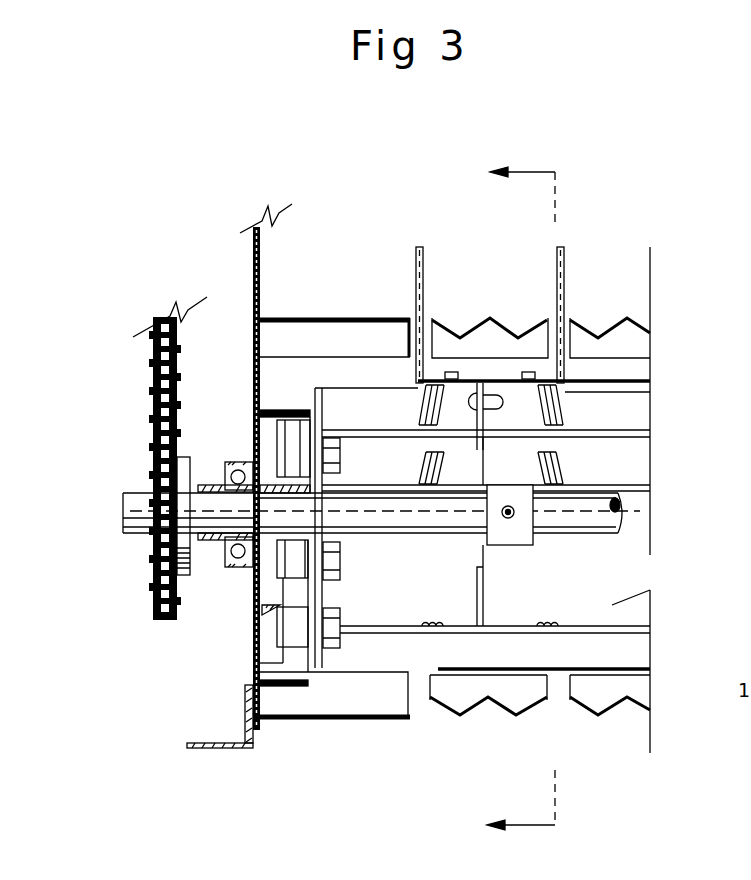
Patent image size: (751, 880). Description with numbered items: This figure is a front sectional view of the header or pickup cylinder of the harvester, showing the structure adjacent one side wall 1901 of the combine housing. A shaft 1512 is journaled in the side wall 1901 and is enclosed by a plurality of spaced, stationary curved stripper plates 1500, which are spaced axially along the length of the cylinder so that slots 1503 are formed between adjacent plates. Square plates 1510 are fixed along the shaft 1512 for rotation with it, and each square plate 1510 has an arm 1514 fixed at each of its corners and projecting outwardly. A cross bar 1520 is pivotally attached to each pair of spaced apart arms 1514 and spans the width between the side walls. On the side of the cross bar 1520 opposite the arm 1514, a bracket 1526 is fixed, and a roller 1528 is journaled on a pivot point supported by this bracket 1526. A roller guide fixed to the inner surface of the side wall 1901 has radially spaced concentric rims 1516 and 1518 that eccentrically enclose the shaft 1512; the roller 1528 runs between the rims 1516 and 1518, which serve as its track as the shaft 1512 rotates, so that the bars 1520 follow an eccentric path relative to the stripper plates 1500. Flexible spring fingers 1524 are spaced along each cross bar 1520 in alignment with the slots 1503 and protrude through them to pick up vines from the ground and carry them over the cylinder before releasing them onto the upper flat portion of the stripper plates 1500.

The side wall 1901 is at (260, 272).
The stripper plate 1500 is at (320, 317).
The spring finger 1524 is at (427, 262).
The cross bar 1520 is at (633, 422).
The shaft 1512 is at (612, 605).
The square plate 1510 is at (485, 557).
The arm 1514 is at (473, 597).
The bracket 1526 is at (312, 390).
The roller 1528 is at (262, 422).
The rim 1516 is at (250, 636).
The rim 1518 is at (282, 680).
The slot 1503 is at (420, 742).